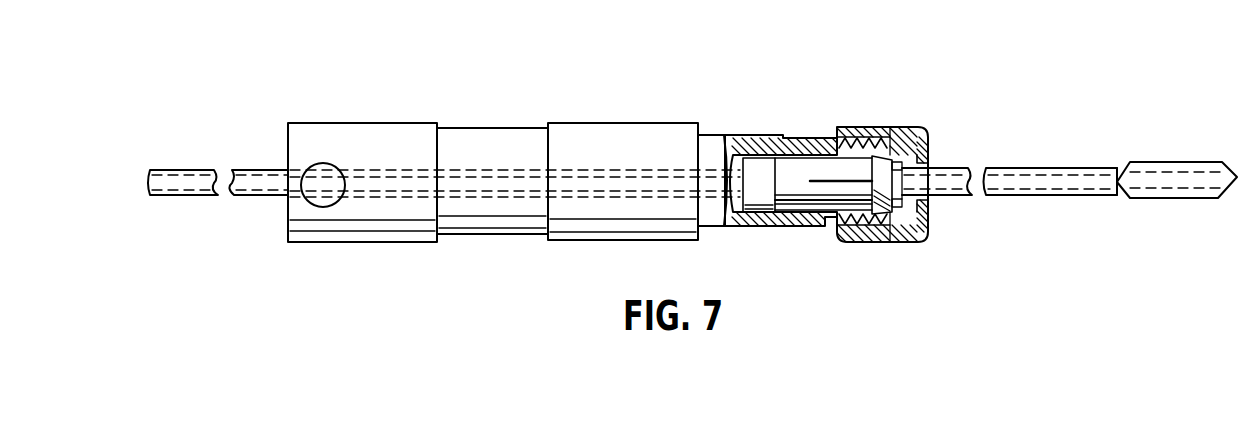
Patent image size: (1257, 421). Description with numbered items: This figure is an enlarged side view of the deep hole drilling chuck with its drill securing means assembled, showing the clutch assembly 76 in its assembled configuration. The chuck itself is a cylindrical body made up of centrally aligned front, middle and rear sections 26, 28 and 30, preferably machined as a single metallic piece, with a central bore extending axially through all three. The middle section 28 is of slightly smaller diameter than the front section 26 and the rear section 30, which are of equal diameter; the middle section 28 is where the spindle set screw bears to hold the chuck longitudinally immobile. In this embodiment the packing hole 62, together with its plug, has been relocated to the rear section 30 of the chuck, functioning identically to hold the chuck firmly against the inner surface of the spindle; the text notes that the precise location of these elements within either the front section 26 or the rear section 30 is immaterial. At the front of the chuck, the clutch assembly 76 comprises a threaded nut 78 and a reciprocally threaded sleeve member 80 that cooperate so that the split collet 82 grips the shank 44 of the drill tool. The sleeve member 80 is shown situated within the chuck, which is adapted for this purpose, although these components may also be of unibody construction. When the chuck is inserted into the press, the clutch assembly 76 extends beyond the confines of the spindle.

The front section 26 is at (630, 138).
The middle section 28 is at (500, 161).
The rear section 30 is at (407, 161).
The shank 44 is at (1043, 168).
The packing hole 62 is at (334, 163).
The clutch assembly 76 is at (814, 256).
The threaded nut 78 is at (923, 125).
The sleeve member 80 is at (762, 135).
The split collet 82 is at (807, 167).